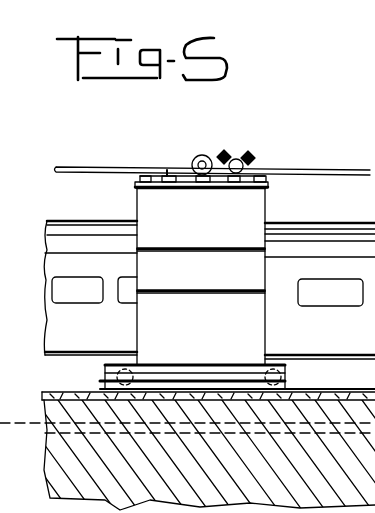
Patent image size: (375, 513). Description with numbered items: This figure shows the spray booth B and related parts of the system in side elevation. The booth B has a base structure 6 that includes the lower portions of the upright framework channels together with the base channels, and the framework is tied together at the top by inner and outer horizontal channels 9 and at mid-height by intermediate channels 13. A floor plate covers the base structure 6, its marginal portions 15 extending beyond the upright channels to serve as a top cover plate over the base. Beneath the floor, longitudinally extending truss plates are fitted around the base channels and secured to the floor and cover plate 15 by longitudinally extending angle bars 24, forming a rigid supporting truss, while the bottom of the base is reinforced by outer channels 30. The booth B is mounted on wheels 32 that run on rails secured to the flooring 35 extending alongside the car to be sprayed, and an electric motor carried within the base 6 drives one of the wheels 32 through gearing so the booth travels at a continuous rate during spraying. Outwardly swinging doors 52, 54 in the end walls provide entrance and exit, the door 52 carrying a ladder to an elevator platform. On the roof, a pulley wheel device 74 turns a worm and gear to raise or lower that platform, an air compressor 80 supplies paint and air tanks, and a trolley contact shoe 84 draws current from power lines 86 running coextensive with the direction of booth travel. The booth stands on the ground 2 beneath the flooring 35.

The ground 2 is at (187, 455).
The base structure 6 is at (185, 374).
The top inner and outer horizontal channels 9 is at (135, 190).
The intermediate channels 13 is at (212, 292).
The marginal portions of the floor plate 15 is at (118, 366).
The longitudinally extending angle bars 24 is at (288, 374).
The outer channels 30 is at (290, 384).
The wheels 32 is at (157, 361).
The flooring 35 is at (40, 394).
The outwardly swinging door 52 is at (132, 331).
The outwardly swinging door 54 is at (272, 328).
The pulley wheel device 74 is at (203, 155).
The air compressor 80 is at (253, 157).
The trolley contact shoe 84 is at (166, 188).
The power lines 86 is at (337, 167).
The booth B is at (250, 212).